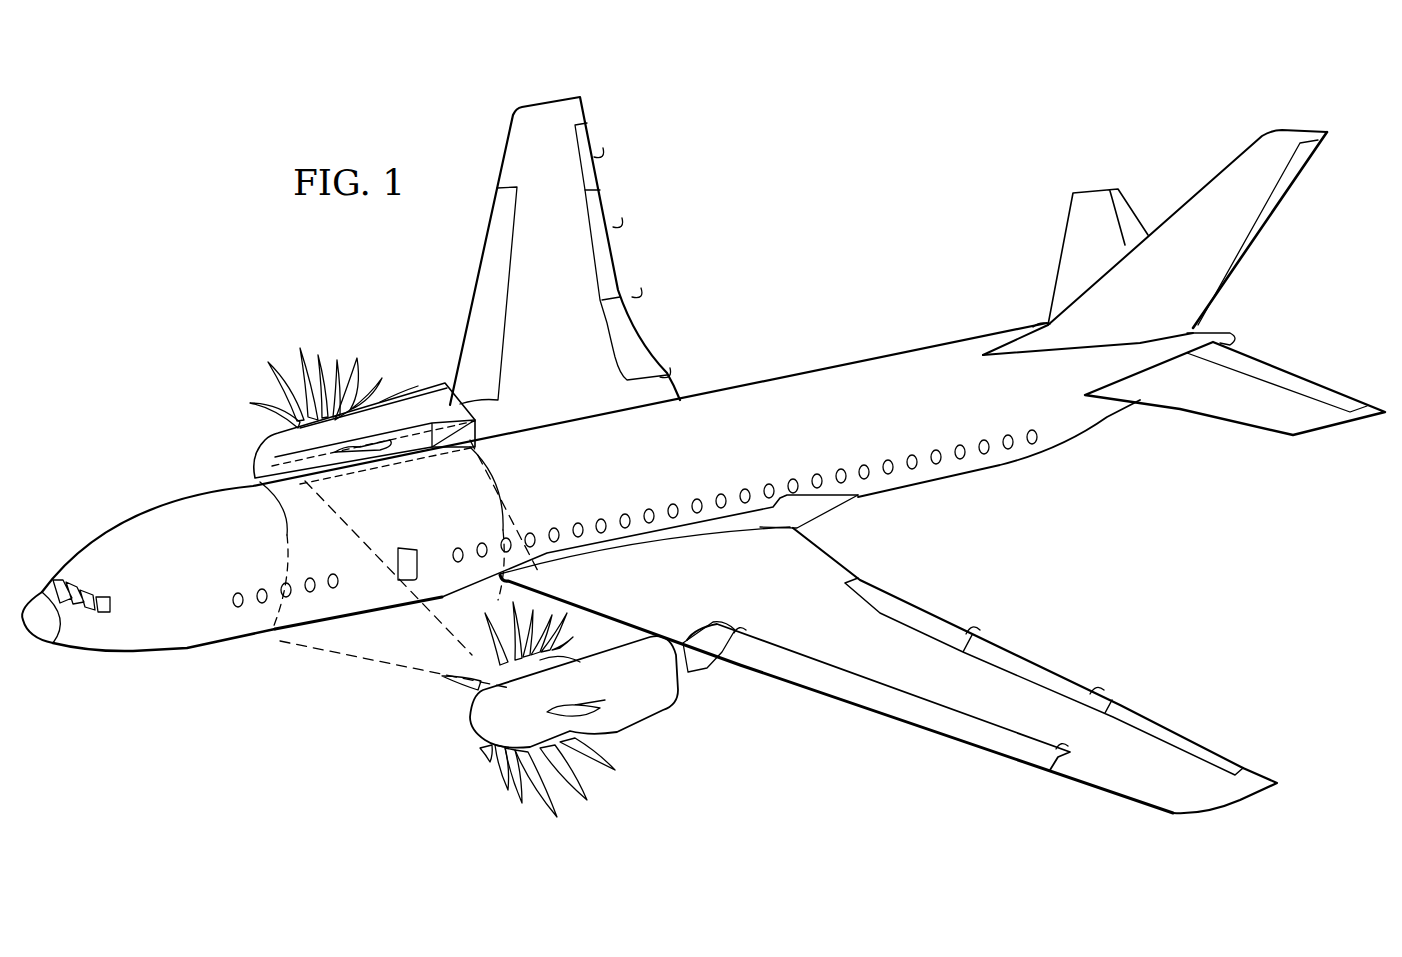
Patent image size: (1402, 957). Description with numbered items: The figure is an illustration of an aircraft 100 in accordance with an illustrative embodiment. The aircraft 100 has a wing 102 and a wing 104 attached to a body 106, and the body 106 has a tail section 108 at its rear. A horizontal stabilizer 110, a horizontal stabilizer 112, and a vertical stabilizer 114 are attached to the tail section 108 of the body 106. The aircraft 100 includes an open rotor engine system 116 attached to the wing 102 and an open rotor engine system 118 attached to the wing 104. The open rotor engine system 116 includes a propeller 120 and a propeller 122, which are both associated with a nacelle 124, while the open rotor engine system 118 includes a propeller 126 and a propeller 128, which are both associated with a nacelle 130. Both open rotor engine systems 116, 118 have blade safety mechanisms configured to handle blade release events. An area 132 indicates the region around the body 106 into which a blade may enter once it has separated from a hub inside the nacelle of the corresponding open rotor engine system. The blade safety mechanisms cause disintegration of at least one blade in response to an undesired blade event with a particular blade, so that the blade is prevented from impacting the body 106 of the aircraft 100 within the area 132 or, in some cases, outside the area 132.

The aircraft 100 is at (889, 152).
The wing 102 is at (556, 98).
The wing 104 is at (1100, 792).
The body 106 is at (161, 511).
The tail section 108 is at (1134, 457).
The horizontal stabilizer 110 is at (1090, 196).
The horizontal stabilizer 112 is at (1243, 410).
The vertical stabilizer 114 is at (1286, 140).
The open rotor engine system 116 is at (252, 363).
The open rotor engine system 118 is at (547, 828).
The propeller 120 is at (296, 332).
The propeller 122 is at (358, 342).
The nacelle 124 is at (419, 400).
The propeller 126 is at (490, 799).
The propeller 128 is at (604, 803).
The nacelle 130 is at (656, 696).
The area 132 is at (386, 666).